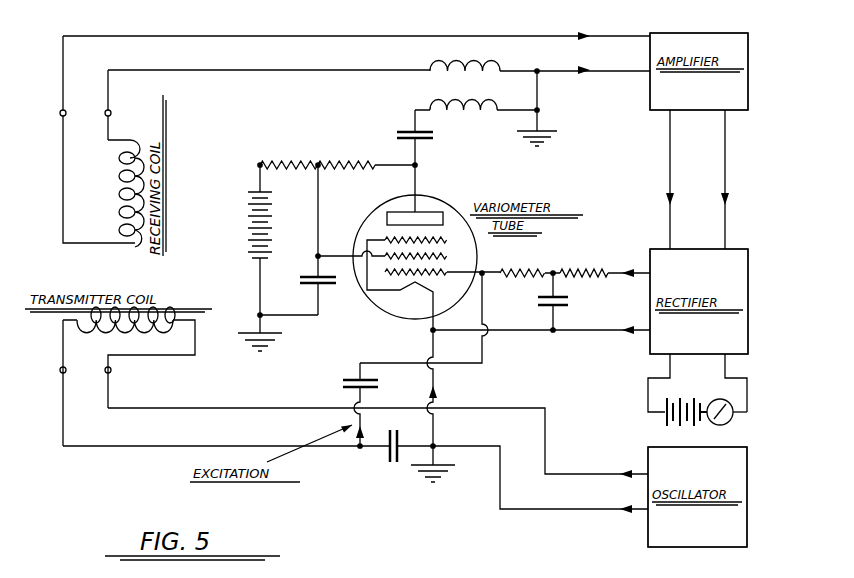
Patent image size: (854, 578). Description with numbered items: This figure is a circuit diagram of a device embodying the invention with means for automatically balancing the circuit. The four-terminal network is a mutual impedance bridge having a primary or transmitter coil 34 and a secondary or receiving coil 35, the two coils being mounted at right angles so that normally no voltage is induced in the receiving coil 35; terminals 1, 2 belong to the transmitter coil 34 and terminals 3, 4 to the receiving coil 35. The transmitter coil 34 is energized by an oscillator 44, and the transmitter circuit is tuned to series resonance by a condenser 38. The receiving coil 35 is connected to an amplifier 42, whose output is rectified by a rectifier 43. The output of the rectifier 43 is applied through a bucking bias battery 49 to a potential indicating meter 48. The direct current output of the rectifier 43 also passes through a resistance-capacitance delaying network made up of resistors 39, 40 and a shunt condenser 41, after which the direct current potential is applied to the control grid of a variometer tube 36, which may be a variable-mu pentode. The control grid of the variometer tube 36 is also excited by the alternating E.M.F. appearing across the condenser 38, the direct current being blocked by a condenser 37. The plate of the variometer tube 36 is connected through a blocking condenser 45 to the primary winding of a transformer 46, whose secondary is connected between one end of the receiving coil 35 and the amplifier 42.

The transmitter coil terminal 1 is at (59, 371).
The transmitter coil terminal 2 is at (112, 371).
The receiving coil terminal 3 is at (57, 114).
The receiving coil terminal 4 is at (112, 113).
The transmitter coil 34 is at (125, 337).
The receiving coil 35 is at (118, 178).
The variometer tube 36 is at (450, 200).
The condenser 37 is at (338, 381).
The condenser 38 is at (389, 450).
The resistor 39 is at (527, 268).
The resistor 40 is at (597, 268).
The shunt condenser 41 is at (571, 302).
The amplifier 42 is at (657, 45).
The rectifier 43 is at (661, 262).
The oscillator 44 is at (668, 530).
The blocking condenser 45 is at (432, 140).
The transformer 46 is at (470, 92).
The potential indicating meter 48 is at (732, 420).
The bucking bias battery 49 is at (661, 423).